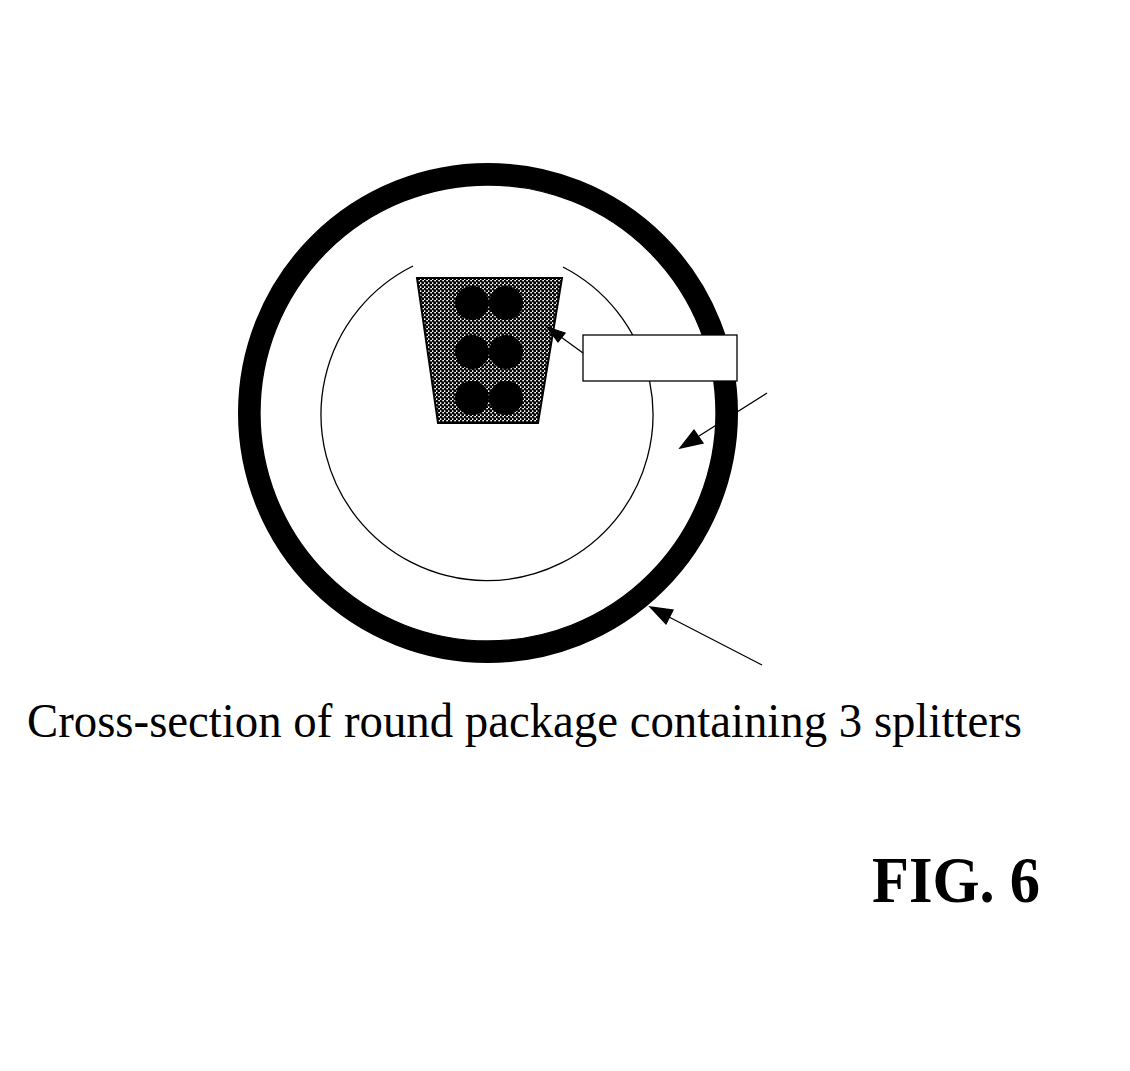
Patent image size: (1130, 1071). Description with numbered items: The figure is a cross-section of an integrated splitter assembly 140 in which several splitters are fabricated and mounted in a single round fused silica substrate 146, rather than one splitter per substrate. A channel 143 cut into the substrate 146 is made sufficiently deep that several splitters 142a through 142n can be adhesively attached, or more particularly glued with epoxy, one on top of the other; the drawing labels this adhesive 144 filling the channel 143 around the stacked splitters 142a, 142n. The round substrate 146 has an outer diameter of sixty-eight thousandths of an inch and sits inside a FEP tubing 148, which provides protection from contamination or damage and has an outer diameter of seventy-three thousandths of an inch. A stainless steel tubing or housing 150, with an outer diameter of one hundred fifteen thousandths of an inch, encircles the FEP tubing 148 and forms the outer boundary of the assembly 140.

The integrated splitter assembly 140 is at (606, 376).
The splitter 142a is at (512, 300).
The splitter 142n is at (510, 402).
The channel 143 is at (442, 339).
The adhesive 144 is at (713, 360).
The fused silica substrate 146 is at (499, 538).
The FEP tubing 148 is at (938, 422).
The stainless steel housing 150 is at (1033, 622).